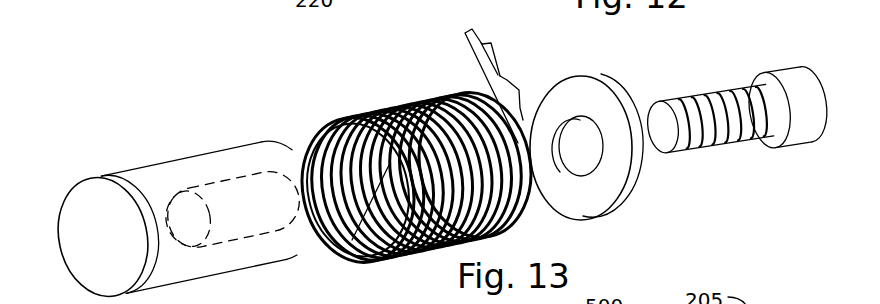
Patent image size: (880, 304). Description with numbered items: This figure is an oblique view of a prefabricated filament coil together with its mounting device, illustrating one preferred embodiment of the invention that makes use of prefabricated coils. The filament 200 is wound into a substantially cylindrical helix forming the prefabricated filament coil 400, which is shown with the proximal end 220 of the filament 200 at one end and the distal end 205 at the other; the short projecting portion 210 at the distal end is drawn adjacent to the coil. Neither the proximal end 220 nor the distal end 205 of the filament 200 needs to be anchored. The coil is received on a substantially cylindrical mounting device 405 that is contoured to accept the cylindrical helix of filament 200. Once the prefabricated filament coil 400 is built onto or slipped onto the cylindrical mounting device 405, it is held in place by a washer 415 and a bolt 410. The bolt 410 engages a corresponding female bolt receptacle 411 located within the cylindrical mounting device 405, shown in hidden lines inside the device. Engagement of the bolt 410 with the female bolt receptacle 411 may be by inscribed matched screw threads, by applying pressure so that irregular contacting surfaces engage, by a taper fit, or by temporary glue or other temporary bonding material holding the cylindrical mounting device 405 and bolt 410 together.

The filament 200 is at (471, 72).
The distal end 205 is at (470, 31).
The strip tab 210 is at (505, 78).
The proximal end 220 is at (352, 240).
The prefabricated filament coil 400 is at (310, 137).
The cylindrical mounting device 405 is at (78, 182).
The bolt 410 is at (665, 100).
The female bolt receptacle 411 is at (247, 238).
The washer 415 is at (622, 213).